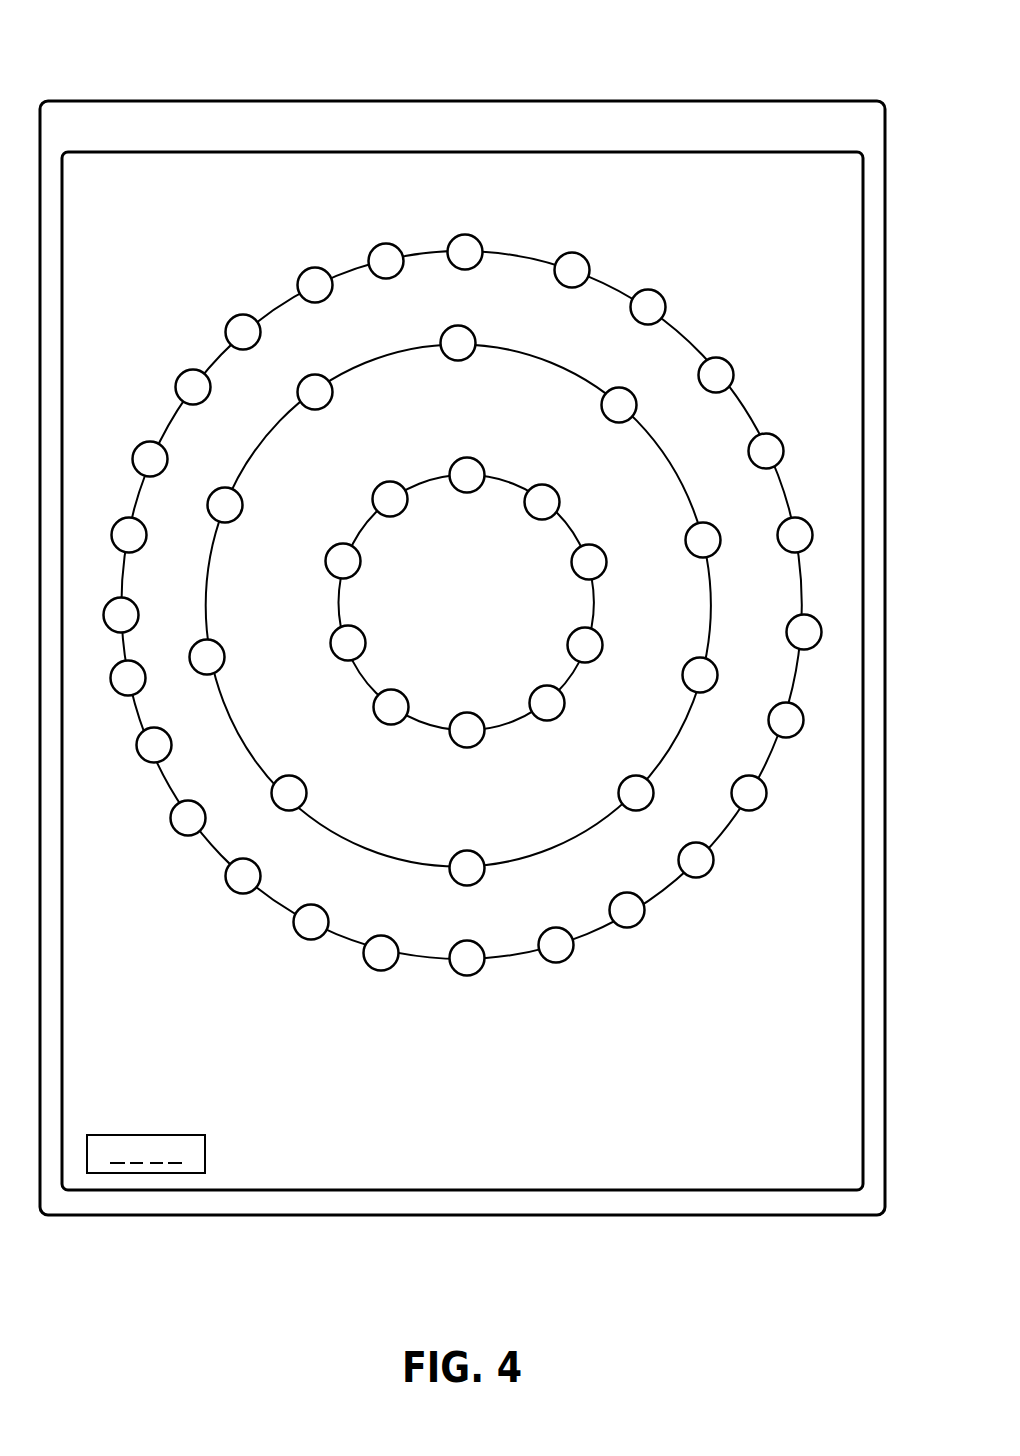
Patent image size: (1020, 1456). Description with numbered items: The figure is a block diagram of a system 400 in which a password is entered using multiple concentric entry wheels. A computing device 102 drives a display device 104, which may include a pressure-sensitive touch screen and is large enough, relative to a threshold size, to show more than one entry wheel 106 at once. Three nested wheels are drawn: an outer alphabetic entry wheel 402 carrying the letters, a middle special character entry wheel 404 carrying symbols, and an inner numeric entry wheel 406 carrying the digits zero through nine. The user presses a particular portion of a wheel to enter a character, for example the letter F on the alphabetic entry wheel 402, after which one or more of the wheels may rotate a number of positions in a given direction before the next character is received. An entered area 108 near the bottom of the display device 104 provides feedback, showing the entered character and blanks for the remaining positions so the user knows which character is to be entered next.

The system 400 is at (100, 54).
The computing device 102 is at (577, 133).
The display device 104 is at (560, 183).
The entry wheel 106 is at (670, 78).
The entered area 108 is at (112, 1135).
The alphabetic entry wheel 402 is at (615, 283).
The special character entry wheel 404 is at (533, 355).
The numeric entry wheel 406 is at (512, 478).